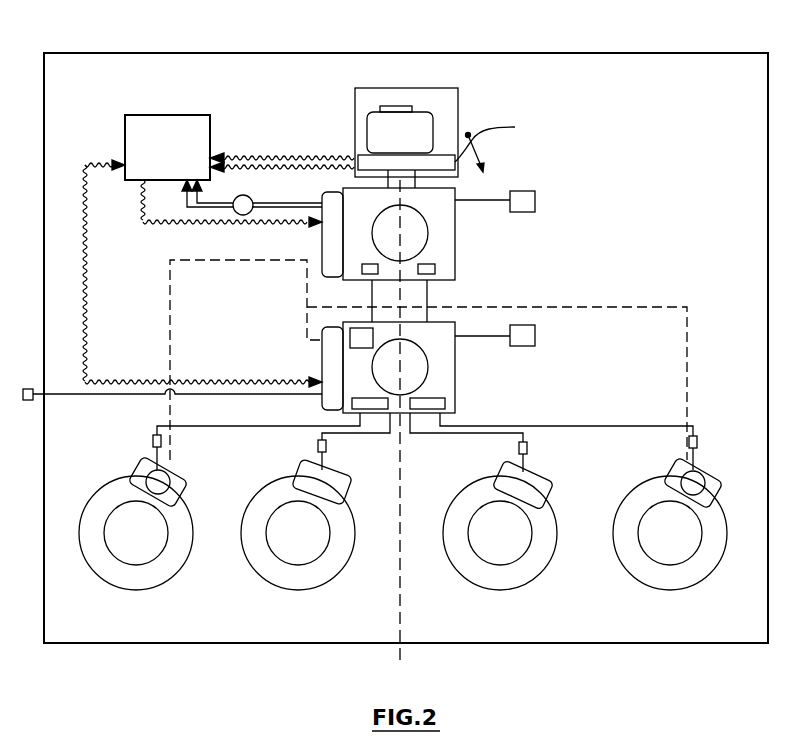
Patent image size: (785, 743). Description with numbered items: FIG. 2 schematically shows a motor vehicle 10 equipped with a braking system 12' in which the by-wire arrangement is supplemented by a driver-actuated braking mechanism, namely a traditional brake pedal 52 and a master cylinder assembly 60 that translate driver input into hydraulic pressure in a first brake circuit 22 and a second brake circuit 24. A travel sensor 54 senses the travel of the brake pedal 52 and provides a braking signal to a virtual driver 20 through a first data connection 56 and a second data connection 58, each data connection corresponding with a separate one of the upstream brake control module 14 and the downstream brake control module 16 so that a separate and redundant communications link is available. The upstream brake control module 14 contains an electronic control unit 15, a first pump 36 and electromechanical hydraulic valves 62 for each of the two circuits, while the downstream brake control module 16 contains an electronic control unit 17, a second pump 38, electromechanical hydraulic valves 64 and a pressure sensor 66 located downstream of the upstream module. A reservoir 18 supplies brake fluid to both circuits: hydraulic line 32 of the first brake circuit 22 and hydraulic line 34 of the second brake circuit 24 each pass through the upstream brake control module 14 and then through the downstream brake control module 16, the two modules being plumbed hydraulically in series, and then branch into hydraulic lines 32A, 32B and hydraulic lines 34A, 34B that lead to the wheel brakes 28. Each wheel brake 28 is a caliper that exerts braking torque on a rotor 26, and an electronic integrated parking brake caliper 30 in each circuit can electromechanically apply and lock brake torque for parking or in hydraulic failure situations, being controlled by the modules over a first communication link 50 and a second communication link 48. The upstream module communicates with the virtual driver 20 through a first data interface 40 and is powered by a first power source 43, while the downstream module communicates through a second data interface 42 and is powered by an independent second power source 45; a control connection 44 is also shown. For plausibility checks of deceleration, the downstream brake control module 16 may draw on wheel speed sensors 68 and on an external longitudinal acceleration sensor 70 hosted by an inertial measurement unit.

The motor vehicle 10 is at (350, 53).
The braking system 12' is at (678, 175).
The upstream brake control module 14 is at (443, 255).
The electronic control unit 15 is at (322, 248).
The downstream brake control module 16 is at (450, 385).
The electronic control unit 17 is at (322, 355).
The reservoir 18 is at (430, 138).
The virtual driver 20 is at (165, 122).
The first brake circuit 22 is at (386, 626).
The second brake circuit 24 is at (441, 626).
The rotor 26 is at (632, 512).
The wheel brake 28 is at (709, 488).
The electronic integrated parking brake caliper 30 is at (680, 473).
The hydraulic line 32 is at (360, 297).
The hydraulic line 32A is at (243, 433).
The hydraulic line 32B is at (318, 456).
The hydraulic line 34 is at (428, 298).
The hydraulic line 34A is at (474, 433).
The hydraulic line 34B is at (575, 426).
The first pump 36 is at (420, 240).
The second pump 38 is at (420, 367).
The first data interface 40 is at (175, 225).
The second data interface 42 is at (74, 288).
The first power source 43 is at (535, 202).
The control connection 44 is at (250, 206).
The second power source 45 is at (535, 340).
The second communication link 48 is at (635, 307).
The first communication link 50 is at (172, 307).
The brake pedal 52 is at (485, 156).
The travel sensor 54 is at (500, 137).
The first data connection 56 is at (252, 157).
The second data connection 58 is at (301, 166).
The master cylinder assembly 60 is at (421, 95).
The electromechanical hydraulic valves 62 is at (378, 270).
The electromechanical hydraulic valves 64 is at (385, 404).
The pressure sensor 66 is at (362, 338).
The wheel speed sensors 68 is at (693, 435).
The external longitudinal acceleration sensor 70 is at (28, 389).